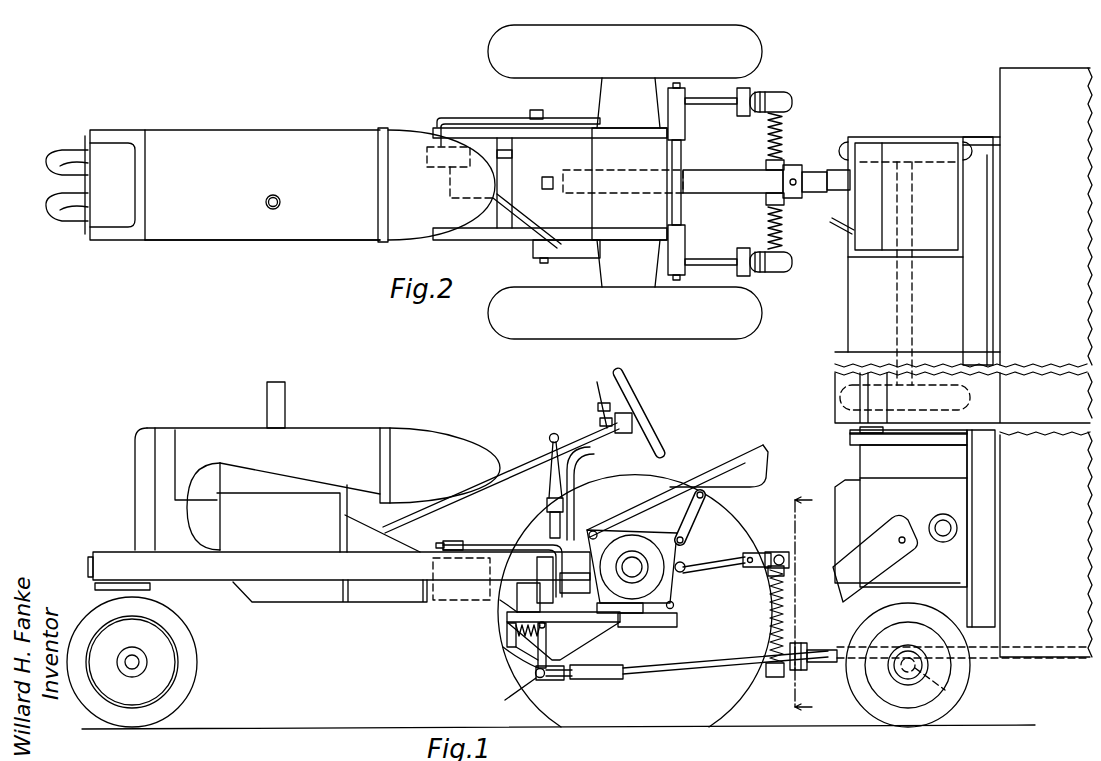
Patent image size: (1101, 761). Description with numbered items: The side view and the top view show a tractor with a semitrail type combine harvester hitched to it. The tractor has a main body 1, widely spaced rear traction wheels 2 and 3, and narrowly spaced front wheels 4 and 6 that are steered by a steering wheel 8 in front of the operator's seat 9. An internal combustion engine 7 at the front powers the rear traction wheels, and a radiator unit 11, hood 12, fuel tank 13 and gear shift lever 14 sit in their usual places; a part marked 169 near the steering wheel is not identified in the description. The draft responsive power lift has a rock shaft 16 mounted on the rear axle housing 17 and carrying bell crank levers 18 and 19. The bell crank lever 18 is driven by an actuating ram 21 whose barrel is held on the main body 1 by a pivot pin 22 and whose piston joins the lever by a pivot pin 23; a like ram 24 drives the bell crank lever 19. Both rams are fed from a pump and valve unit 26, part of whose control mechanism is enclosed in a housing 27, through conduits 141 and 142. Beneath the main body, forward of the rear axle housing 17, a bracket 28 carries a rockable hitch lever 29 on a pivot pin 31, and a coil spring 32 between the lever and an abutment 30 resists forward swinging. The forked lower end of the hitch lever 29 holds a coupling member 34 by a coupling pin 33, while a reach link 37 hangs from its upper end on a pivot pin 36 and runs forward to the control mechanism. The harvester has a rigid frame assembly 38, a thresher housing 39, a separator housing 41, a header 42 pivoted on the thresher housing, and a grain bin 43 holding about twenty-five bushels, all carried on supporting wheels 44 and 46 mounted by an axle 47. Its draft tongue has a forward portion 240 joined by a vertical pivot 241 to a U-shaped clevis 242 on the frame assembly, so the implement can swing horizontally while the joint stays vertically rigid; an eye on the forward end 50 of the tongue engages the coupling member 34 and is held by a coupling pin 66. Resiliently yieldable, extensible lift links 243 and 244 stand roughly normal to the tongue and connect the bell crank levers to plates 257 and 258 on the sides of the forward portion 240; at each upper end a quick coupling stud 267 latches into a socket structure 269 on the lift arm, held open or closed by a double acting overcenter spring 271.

In FIG. 2, the main body 1 is at (262, 185).
In FIG. 1, the main body 1 is at (268, 465).
In FIG. 2, the rear traction wheel 2 is at (493, 296).
In FIG. 2, the rear traction wheel 3 is at (488, 50).
In FIG. 1, the rear traction wheel 3 is at (613, 476).
In FIG. 2, the front wheel 4 is at (50, 206).
In FIG. 1, the front wheel 4 is at (198, 650).
In FIG. 2, the front wheel 6 is at (50, 155).
In FIG. 1, the internal combustion engine 7 is at (296, 488).
In FIG. 1, the steering wheel 8 is at (656, 440).
In FIG. 1, the operator's seat 9 is at (757, 464).
In FIG. 2, the radiator unit 11 is at (134, 186).
In FIG. 1, the radiator unit 11 is at (136, 490).
In FIG. 2, the hood 12 is at (199, 236).
In FIG. 1, the hood 12 is at (216, 430).
In FIG. 2, the fuel tank 13 is at (428, 232).
In FIG. 1, the fuel tank 13 is at (462, 440).
In FIG. 1, the gear shift lever 14 is at (552, 434).
In FIG. 2, the rock shaft 16 is at (681, 213).
In FIG. 1, the rock shaft 16 is at (683, 572).
In FIG. 2, the rear axle housing 17 is at (620, 243).
In FIG. 1, the rear axle housing 17 is at (636, 545).
In FIG. 2, the bell crank lever 18 is at (704, 259).
In FIG. 1, the bell crank lever 18 is at (718, 568).
In FIG. 2, the bell crank lever 19 is at (703, 104).
In FIG. 2, the actuating ram 21 is at (565, 258).
In FIG. 1, the actuating ram 21 is at (628, 622).
In FIG. 2, the pivot pin 22 is at (540, 258).
In FIG. 1, the pivot pin 22 is at (537, 578).
In FIG. 1, the pivot pin 23 is at (676, 606).
In FIG. 2, the actuating ram 24 is at (575, 118).
In FIG. 2, the pump and valve unit 26 is at (430, 167).
In FIG. 1, the pump and valve unit 26 is at (432, 562).
In FIG. 2, the housing 27 is at (512, 155).
In FIG. 1, the housing 27 is at (516, 600).
In FIG. 1, the bracket 28 is at (515, 660).
In FIG. 1, the rockable hitch lever 29 is at (556, 640).
In FIG. 1, the abutment 30 is at (506, 638).
In FIG. 1, the pivot pin 31 is at (538, 660).
In FIG. 1, the coil spring 32 is at (516, 650).
In FIG. 1, the coupling pin 33 is at (515, 696).
In FIG. 1, the coupling member 34 is at (540, 680).
In FIG. 1, the pivot pin 36 is at (540, 631).
In FIG. 1, the reach link 37 is at (500, 602).
In FIG. 2, the rigid frame assembly 38 is at (852, 183).
In FIG. 1, the rigid frame assembly 38 is at (845, 650).
In FIG. 2, the thresher housing 39 is at (963, 397).
In FIG. 1, the thresher housing 39 is at (901, 516).
In FIG. 2, the separator housing 41 is at (963, 217).
In FIG. 1, the separator housing 41 is at (1029, 543).
In FIG. 1, the header 42 is at (838, 565).
In FIG. 2, the grain bin 43 is at (929, 246).
In FIG. 1, the grain bin 43 is at (858, 459).
In FIG. 2, the ground engaging supporting wheel 44 is at (846, 412).
In FIG. 1, the ground engaging supporting wheel 44 is at (972, 674).
In FIG. 2, the ground engaging supporting wheel 46 is at (843, 147).
In FIG. 2, the axle 47 is at (913, 322).
In FIG. 1, the axle 47 is at (933, 682).
In FIG. 2, the forward end of draft tongue 50 is at (556, 172).
In FIG. 1, the forward end of draft tongue 50 is at (572, 680).
In FIG. 1, the coupling pin 66 is at (560, 680).
In FIG. 2, the conduit 141 is at (515, 240).
In FIG. 1, the conduit 141 is at (486, 543).
In FIG. 2, the connecting conduit 142 is at (472, 119).
In FIG. 1, the rod 169 is at (596, 384).
In FIG. 2, the forward portion of draft tongue 240 is at (722, 170).
In FIG. 1, the forward portion of draft tongue 240 is at (715, 662).
In FIG. 2, the vertical pivot 241 is at (808, 192).
In FIG. 1, the vertical pivot 241 is at (815, 663).
In FIG. 2, the U-shaped clevis 242 is at (795, 165).
In FIG. 1, the U-shaped clevis 242 is at (805, 638).
In FIG. 2, the lift link 243 is at (780, 225).
In FIG. 1, the lift link 243 is at (759, 616).
In FIG. 2, the lift link 244 is at (764, 137).
In FIG. 2, the plate 257 is at (766, 200).
In FIG. 1, the plate 257 is at (772, 678).
In FIG. 2, the plate 258 is at (761, 174).
In FIG. 1, the quick coupling stud 267 is at (784, 572).
In FIG. 2, the socket structure 269 is at (738, 96).
In FIG. 1, the socket structure 269 is at (748, 552).
In FIG. 2, the double acting overcenter spring 271 is at (790, 106).
In FIG. 1, the double acting overcenter spring 271 is at (777, 551).